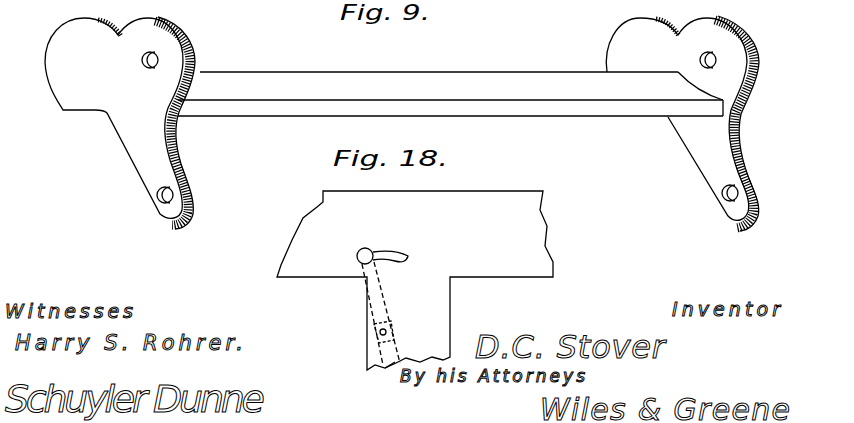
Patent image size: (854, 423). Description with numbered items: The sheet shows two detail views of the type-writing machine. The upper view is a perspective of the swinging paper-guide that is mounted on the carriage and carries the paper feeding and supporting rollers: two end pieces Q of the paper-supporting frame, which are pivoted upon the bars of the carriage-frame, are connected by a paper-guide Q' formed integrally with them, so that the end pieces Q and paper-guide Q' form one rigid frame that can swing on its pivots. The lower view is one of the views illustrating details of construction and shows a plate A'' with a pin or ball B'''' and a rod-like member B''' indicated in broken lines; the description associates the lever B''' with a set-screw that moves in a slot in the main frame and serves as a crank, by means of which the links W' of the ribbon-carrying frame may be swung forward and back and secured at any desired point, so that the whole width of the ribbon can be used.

In FIG. 9, the end piece Q is at (414, 123).
In FIG. 9, the paper-guide Q' is at (450, 82).
In FIG. 18, the plate A'' is at (429, 280).
In FIG. 18, the ball-headed pin B'''' is at (382, 243).
In FIG. 18, the lever B''' is at (358, 313).
In FIG. 18, the link W' is at (382, 378).